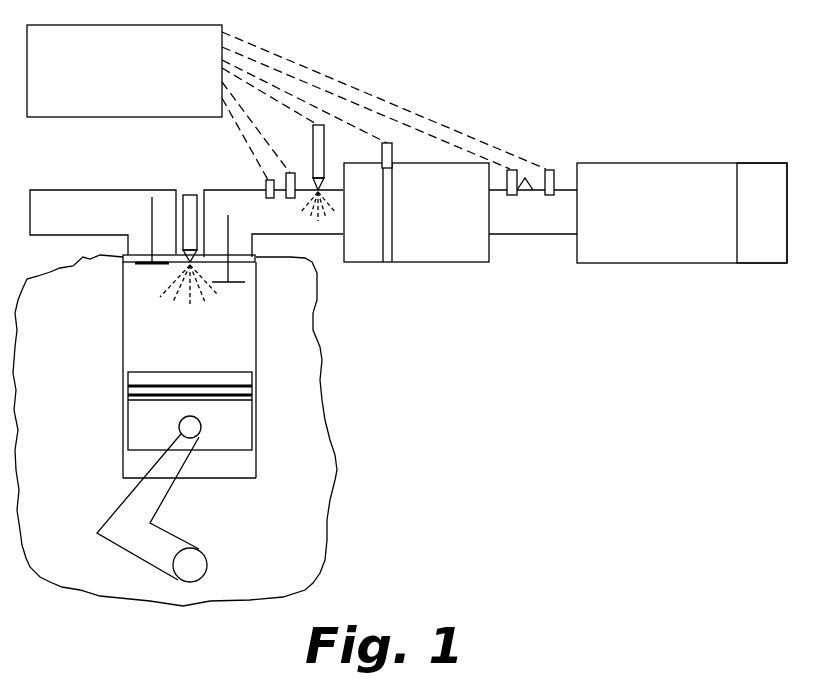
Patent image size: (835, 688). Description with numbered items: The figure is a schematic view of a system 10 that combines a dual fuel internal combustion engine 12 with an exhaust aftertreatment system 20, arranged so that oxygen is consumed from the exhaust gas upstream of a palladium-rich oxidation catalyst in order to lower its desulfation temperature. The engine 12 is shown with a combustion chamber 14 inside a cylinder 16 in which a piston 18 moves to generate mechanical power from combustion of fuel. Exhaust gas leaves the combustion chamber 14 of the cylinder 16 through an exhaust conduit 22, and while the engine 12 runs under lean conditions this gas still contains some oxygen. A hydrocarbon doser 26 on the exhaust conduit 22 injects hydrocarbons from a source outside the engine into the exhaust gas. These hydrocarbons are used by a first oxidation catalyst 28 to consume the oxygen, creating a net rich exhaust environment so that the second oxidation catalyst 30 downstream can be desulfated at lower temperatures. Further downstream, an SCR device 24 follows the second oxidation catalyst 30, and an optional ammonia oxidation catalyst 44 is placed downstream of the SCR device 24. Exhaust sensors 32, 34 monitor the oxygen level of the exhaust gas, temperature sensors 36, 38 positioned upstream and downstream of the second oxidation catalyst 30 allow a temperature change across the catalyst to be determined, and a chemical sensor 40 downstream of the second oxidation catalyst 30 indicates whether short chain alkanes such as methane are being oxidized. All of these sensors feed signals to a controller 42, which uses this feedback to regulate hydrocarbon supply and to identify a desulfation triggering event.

The system 10 is at (448, 416).
The dual fuel internal combustion engine 12 is at (84, 358).
The combustion chamber 14 is at (207, 352).
The cylinder 16 is at (257, 456).
The piston 18 is at (142, 412).
The exhaust aftertreatment system 20 is at (668, 82).
The exhaust conduit 22 is at (285, 217).
The SCR device 24 is at (655, 263).
The hydrocarbon doser 26 is at (325, 170).
The first oxidation catalyst 28 is at (365, 263).
The second oxidation catalyst 30 is at (457, 263).
The exhaust sensor 32 is at (266, 183).
The exhaust sensor 34 is at (290, 173).
The temperature sensor 36 is at (382, 150).
The temperature sensor 38 is at (524, 176).
The chemical sensor 40 is at (551, 170).
The controller 42 is at (137, 85).
The ammonia oxidation catalyst 44 is at (760, 263).